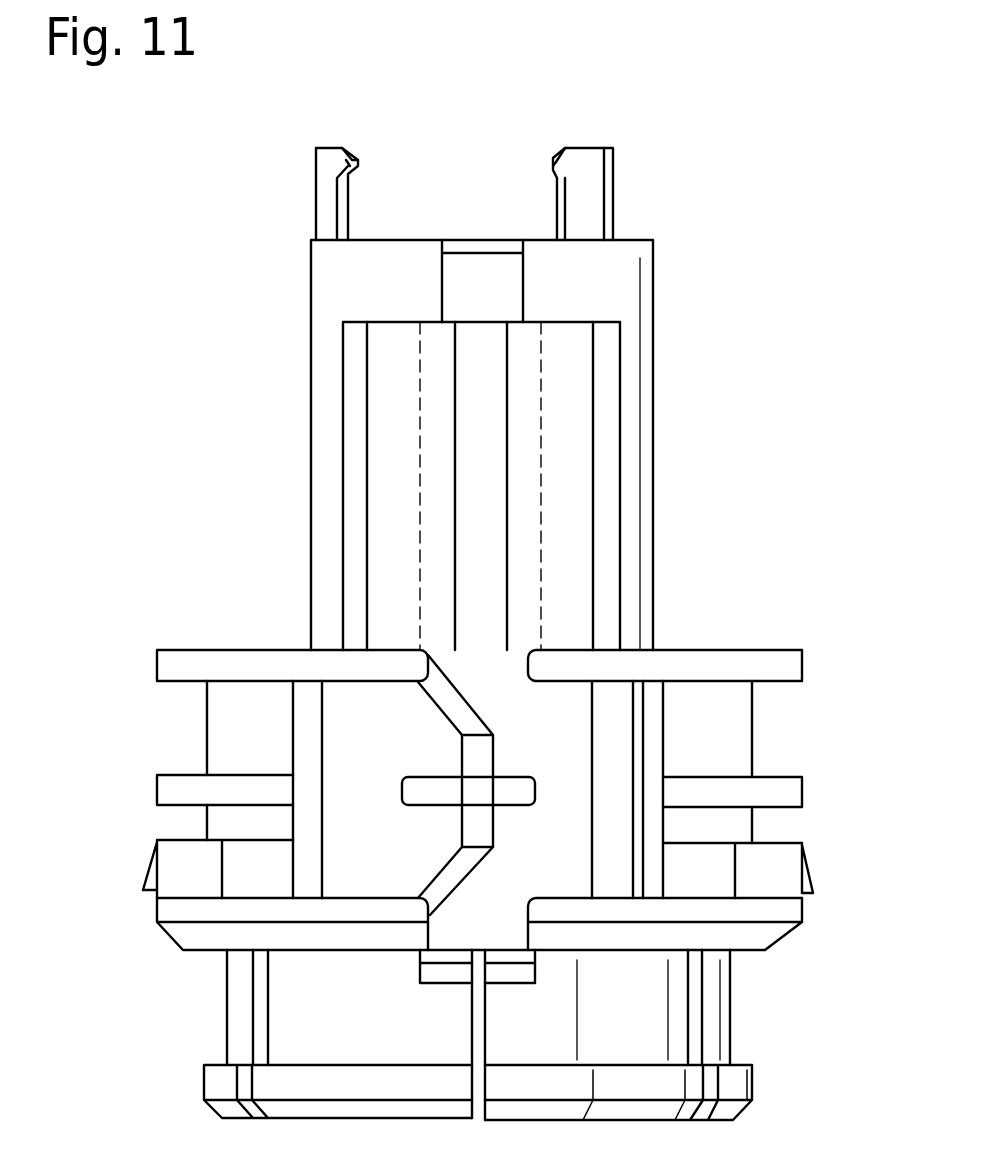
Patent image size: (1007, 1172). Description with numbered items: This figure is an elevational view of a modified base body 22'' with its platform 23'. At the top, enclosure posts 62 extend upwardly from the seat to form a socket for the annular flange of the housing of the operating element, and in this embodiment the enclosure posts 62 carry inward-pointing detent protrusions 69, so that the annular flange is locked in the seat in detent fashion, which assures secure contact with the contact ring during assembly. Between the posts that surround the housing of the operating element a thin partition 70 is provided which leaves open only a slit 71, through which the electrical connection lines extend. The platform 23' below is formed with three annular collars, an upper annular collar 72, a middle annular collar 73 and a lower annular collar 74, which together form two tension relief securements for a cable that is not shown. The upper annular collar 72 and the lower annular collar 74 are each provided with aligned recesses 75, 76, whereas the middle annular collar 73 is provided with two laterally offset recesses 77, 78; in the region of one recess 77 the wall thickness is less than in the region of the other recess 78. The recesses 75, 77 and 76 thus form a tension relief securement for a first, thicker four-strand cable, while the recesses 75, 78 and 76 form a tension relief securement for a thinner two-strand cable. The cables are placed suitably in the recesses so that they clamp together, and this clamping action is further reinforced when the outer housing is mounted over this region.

The base body 22'' is at (342, 445).
The platform 23' is at (407, 789).
The enclosure posts 62 is at (342, 192).
The detent protrusions 69 is at (356, 156).
The guide block 70 is at (565, 495).
The slit 71 is at (483, 397).
The upper annular collar 72 is at (735, 664).
The middle annular collar 73 is at (787, 791).
The lower annular collar 74 is at (787, 912).
The recess 75 is at (480, 653).
The recess 76 is at (504, 933).
The recess 77 is at (568, 758).
The recess 78 is at (340, 807).